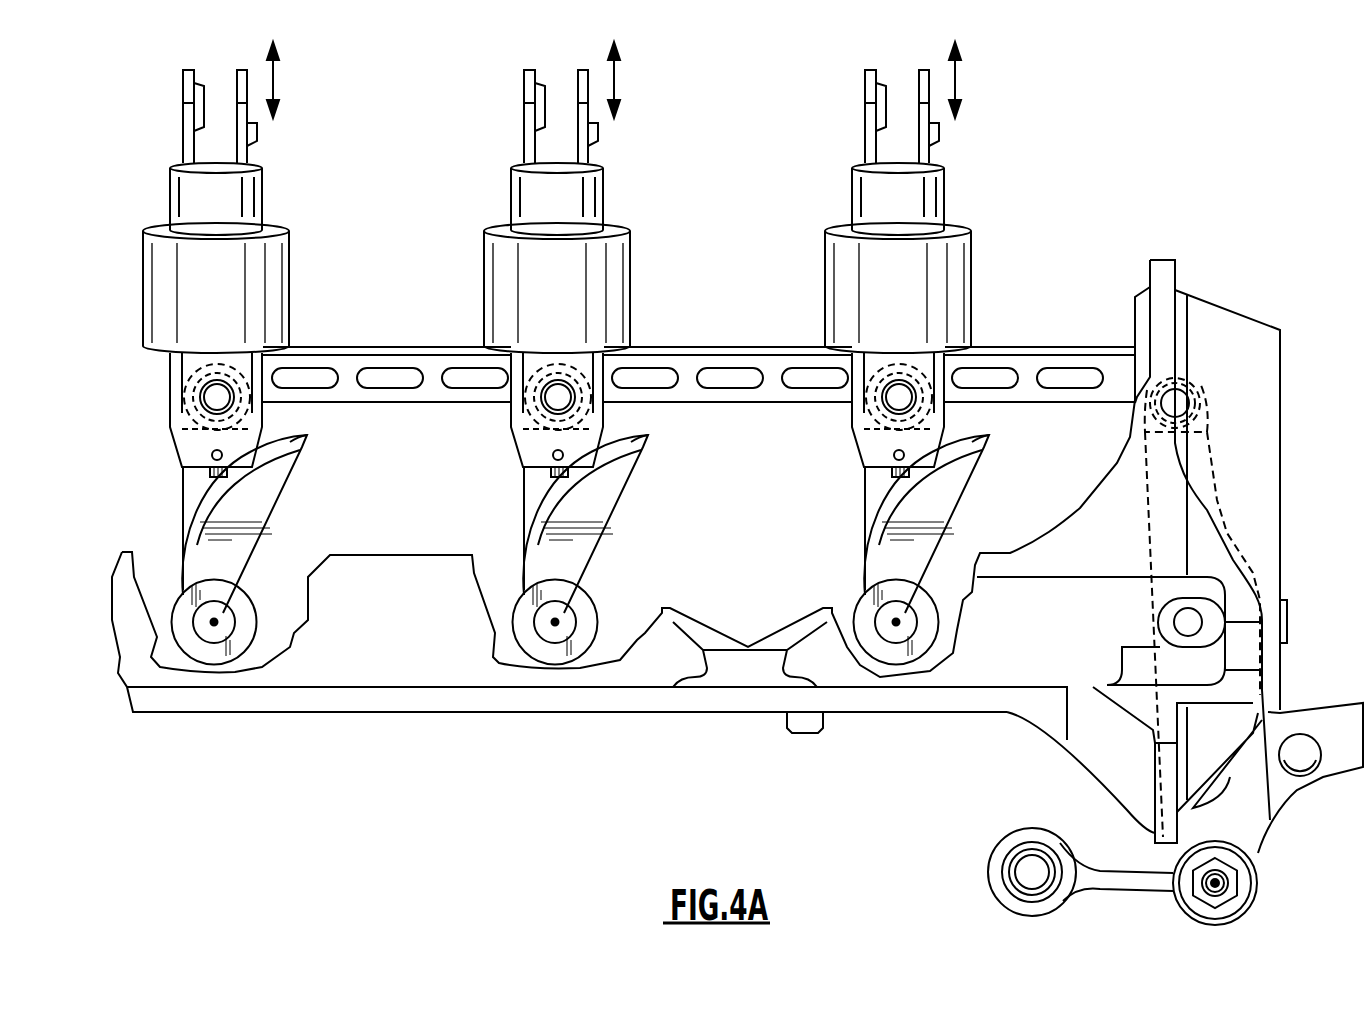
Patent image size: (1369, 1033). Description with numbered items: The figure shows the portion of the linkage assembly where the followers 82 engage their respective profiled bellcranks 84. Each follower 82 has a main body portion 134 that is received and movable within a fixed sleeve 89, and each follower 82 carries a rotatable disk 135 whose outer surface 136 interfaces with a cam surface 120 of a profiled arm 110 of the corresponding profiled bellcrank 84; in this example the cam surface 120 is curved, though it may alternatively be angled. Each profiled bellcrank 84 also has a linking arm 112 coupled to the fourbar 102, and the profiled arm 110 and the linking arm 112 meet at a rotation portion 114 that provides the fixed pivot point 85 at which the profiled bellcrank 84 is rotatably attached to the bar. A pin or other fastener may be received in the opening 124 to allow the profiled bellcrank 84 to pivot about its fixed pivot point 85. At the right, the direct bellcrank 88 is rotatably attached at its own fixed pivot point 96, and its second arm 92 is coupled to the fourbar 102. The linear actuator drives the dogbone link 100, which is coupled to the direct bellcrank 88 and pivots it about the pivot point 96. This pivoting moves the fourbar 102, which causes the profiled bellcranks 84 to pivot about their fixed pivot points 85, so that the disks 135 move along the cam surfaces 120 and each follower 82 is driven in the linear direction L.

The follower 82 is at (190, 202).
The main body portion 134 is at (248, 206).
The fixed sleeve 89 is at (270, 306).
The fourbar 102 is at (1015, 357).
The second arm 92 is at (1198, 386).
The linking arm 112 is at (197, 481).
The rotatable disk 135 is at (203, 484).
The outer surface 136 is at (240, 487).
The profiled arm 110 is at (220, 522).
The profiled bellcrank 84 is at (270, 502).
The opening 124 is at (223, 615).
The rotation portion 114 is at (258, 627).
The fixed pivot point 85 is at (214, 622).
The fixed pivot point 96 is at (1176, 623).
The direct bellcrank 88 is at (1282, 780).
The dogbone link 100 is at (1107, 878).
The cam surface 120 is at (290, 442).